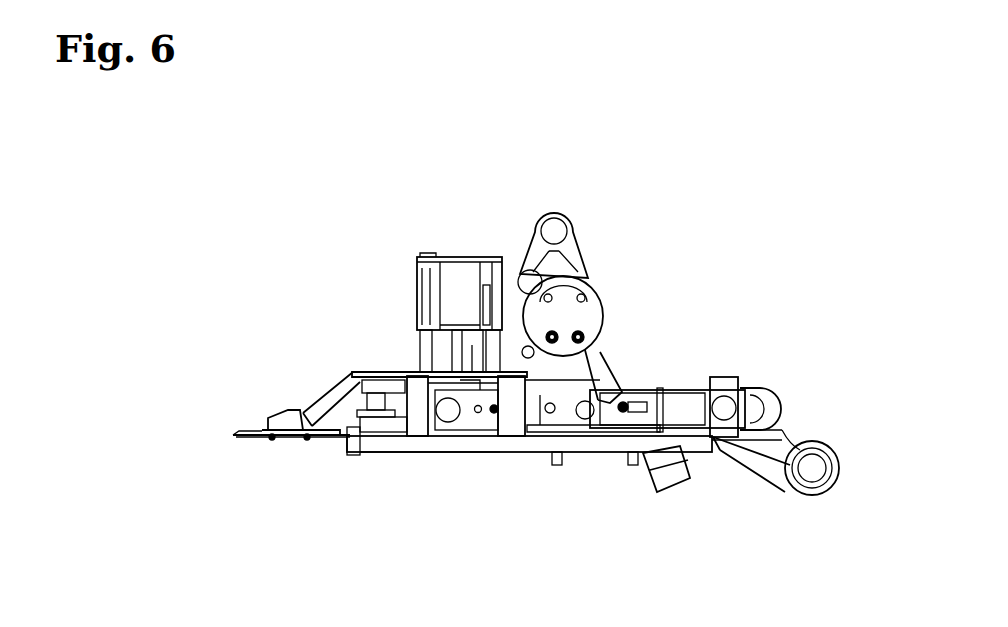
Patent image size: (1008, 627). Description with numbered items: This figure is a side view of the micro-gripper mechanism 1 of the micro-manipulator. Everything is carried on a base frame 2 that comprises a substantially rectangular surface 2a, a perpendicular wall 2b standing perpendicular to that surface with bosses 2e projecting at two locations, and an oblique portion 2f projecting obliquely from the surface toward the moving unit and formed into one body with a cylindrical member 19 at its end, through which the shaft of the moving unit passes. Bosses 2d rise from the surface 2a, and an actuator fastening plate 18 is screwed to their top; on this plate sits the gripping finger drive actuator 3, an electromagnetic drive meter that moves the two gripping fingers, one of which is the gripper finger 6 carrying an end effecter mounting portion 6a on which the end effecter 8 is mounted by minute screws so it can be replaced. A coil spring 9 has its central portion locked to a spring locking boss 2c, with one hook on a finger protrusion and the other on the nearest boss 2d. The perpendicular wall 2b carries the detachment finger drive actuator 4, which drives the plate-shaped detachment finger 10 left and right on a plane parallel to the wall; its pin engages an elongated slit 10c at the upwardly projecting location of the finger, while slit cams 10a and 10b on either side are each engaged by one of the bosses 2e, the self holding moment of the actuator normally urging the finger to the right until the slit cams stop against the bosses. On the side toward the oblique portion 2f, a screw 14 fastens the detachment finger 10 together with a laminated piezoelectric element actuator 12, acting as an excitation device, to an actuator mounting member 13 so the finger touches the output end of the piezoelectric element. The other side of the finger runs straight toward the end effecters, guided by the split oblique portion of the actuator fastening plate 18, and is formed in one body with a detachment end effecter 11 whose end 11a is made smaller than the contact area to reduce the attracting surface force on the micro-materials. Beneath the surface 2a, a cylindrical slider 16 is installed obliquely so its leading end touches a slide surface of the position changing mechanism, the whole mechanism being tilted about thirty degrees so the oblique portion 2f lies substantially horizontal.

The micro-gripper mechanism 1 is at (557, 192).
The base frame 2 is at (500, 443).
The surface 2a is at (452, 445).
The perpendicular wall 2b is at (692, 386).
The spring locking boss 2c is at (352, 440).
The bosses 2d is at (410, 370).
The bosses 2e is at (480, 443).
The oblique portion 2f is at (818, 412).
The gripping finger drive actuator 3 is at (460, 257).
The detachment finger drive actuator 4 is at (588, 258).
The gripper finger 6 is at (330, 397).
The end effecter mounting portion 6a is at (297, 440).
The end effecter 8 is at (237, 440).
The coil spring 9 is at (372, 440).
The detachment finger 10 is at (680, 384).
The slit cam 10a is at (527, 443).
The slit cam 10b is at (657, 440).
The elongated slit 10c is at (612, 360).
The detachment end effecter 11 is at (285, 400).
The end 11a is at (232, 400).
The laminated piezoelectric element actuator 12 is at (760, 407).
The actuator mounting member 13 is at (745, 407).
The screw 14 is at (723, 430).
The cylindrical slider 16 is at (690, 463).
The actuator fastening plate 18 is at (387, 388).
The cylindrical member 19 is at (836, 460).